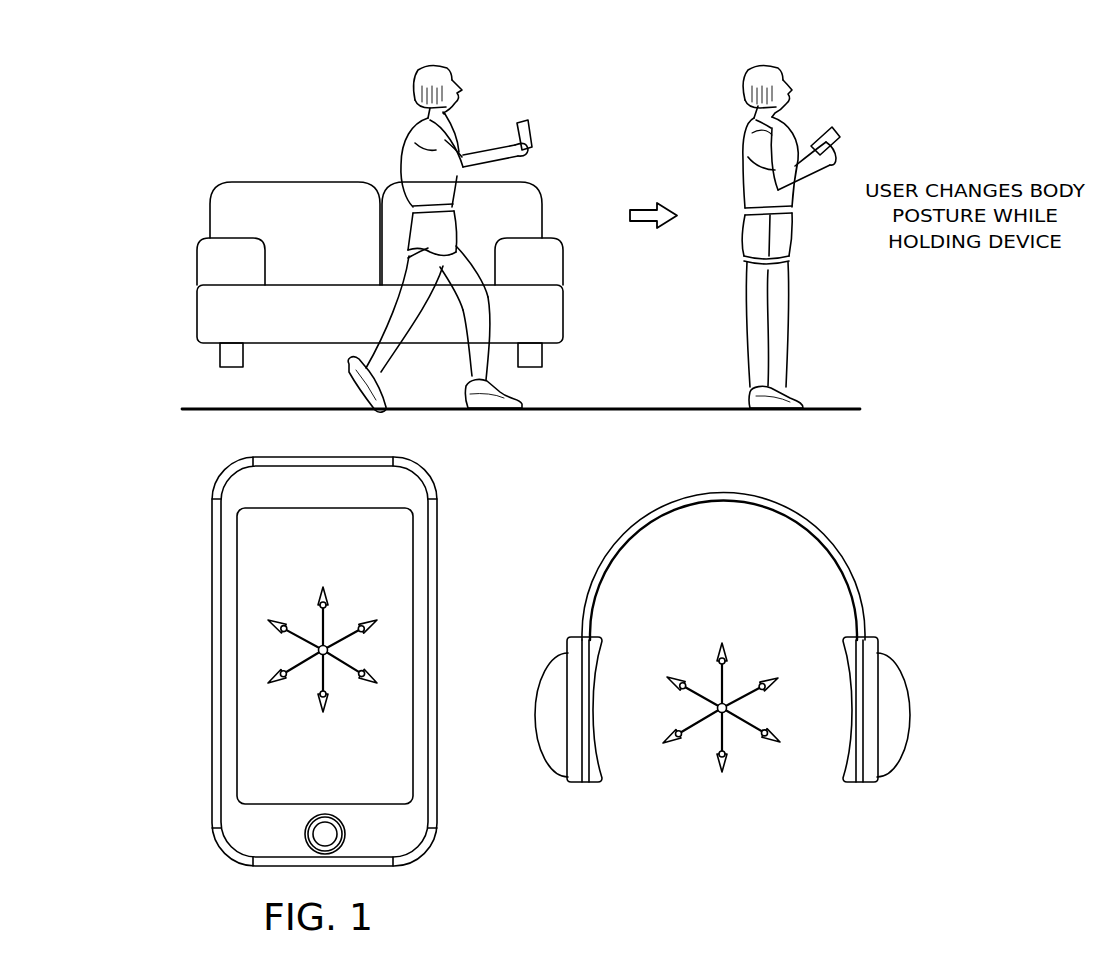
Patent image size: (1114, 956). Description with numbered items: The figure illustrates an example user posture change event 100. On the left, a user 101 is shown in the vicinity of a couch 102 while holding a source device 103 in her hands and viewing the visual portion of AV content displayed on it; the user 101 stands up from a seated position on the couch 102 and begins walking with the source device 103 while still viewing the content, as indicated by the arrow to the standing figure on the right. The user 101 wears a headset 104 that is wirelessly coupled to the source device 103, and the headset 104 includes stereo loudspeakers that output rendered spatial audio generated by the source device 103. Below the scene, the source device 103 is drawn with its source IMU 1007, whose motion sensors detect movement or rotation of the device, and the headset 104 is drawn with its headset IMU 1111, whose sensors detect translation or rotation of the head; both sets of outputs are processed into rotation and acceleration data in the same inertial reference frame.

The system / environment 100 is at (151, 69).
The user 101 is at (435, 65).
The couch 102 is at (294, 180).
The source device 103 is at (553, 108).
The headset 104 is at (802, 514).
The source IMU 1007 is at (296, 600).
The headset IMU 1111 is at (761, 773).